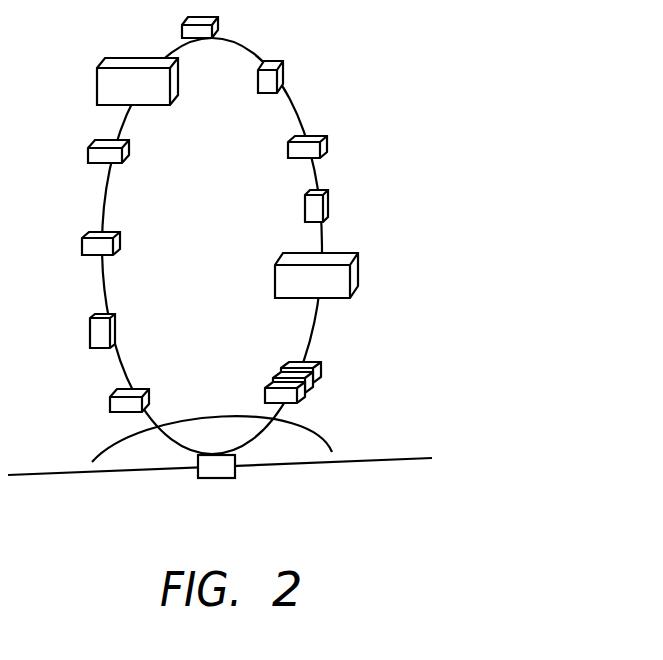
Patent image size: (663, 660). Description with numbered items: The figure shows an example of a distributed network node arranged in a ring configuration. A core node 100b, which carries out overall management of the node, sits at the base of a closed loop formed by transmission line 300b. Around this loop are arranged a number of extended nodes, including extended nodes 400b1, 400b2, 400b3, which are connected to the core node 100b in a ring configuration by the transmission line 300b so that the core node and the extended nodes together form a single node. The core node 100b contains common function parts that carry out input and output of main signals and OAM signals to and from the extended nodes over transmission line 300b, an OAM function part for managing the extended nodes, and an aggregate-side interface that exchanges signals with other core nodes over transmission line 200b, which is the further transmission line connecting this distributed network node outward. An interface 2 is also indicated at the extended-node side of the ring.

The interface 2 is at (338, 357).
The core node 100b is at (203, 480).
The transmission line 200b is at (396, 460).
The transmission line 300b is at (316, 321).
The extended node 400b1 is at (352, 253).
The extended node 400b2 is at (327, 195).
The extended node 400b3 is at (306, 137).